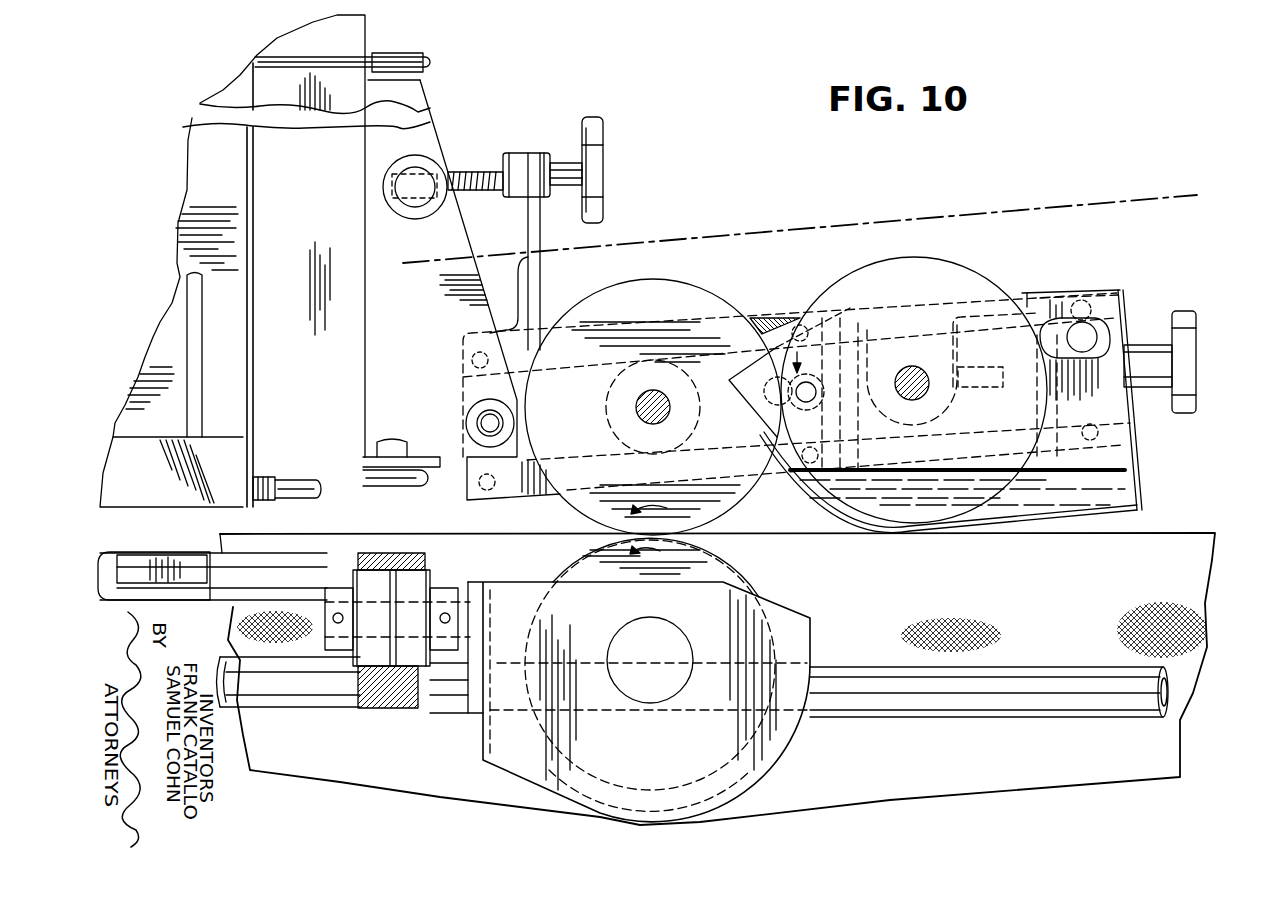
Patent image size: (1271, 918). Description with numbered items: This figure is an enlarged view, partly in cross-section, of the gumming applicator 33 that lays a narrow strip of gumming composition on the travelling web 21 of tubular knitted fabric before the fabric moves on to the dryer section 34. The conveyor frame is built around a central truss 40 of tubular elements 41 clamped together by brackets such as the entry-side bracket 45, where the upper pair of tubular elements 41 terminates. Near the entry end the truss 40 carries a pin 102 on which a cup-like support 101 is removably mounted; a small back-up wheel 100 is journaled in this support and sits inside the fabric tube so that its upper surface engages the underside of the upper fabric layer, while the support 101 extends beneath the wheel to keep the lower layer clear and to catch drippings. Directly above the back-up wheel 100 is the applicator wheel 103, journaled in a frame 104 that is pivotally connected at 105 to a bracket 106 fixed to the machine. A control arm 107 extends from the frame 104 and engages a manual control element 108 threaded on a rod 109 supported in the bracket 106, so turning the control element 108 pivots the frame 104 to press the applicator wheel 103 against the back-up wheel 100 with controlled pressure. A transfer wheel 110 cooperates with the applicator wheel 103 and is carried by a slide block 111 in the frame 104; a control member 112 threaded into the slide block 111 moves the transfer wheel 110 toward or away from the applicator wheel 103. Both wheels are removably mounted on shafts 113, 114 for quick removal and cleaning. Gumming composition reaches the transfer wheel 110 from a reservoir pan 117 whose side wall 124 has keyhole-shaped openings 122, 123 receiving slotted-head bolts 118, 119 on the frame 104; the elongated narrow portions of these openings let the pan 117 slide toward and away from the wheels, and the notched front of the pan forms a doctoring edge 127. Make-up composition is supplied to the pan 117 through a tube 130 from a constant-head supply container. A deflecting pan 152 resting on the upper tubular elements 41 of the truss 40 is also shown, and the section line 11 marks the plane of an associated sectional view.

The section line 11- 11 is at (417, 262).
The web of tubular knitted fabric 21 is at (1198, 632).
The gumming applicator 33 is at (830, 247).
The dryer section 34 is at (402, 37).
The truss 40 is at (311, 712).
The tubular elements 41 is at (279, 572).
The entry-side bracket 45 is at (394, 697).
The back-up roller 100 is at (749, 577).
The cup-like support 101 is at (800, 638).
The pin 102 is at (462, 600).
The applicator wheel 103 is at (705, 294).
The frame 104 is at (761, 329).
The pivotal connection 105 is at (478, 423).
The bracket 106 is at (372, 362).
The control arm 107 is at (541, 235).
The manual control element 108 is at (596, 143).
The rod 109 is at (423, 175).
The transfer wheel 110 is at (961, 273).
The slide block 111 is at (1027, 299).
The control member 112 is at (1154, 352).
The shaft 113 is at (663, 381).
The shaft 114 is at (907, 395).
The reservoir pan 117 is at (1140, 467).
The slotted-head bolt 118 is at (824, 377).
The slotted-head bolt 119 is at (1088, 330).
The keyhole-shaped opening 122 is at (752, 420).
The keyhole-shaped opening 123 is at (1072, 306).
The side wall 124 is at (1110, 399).
The doctoring edge 127 is at (772, 452).
The lubrication fitting 130 is at (292, 481).
The deflecting pan 152 is at (177, 557).